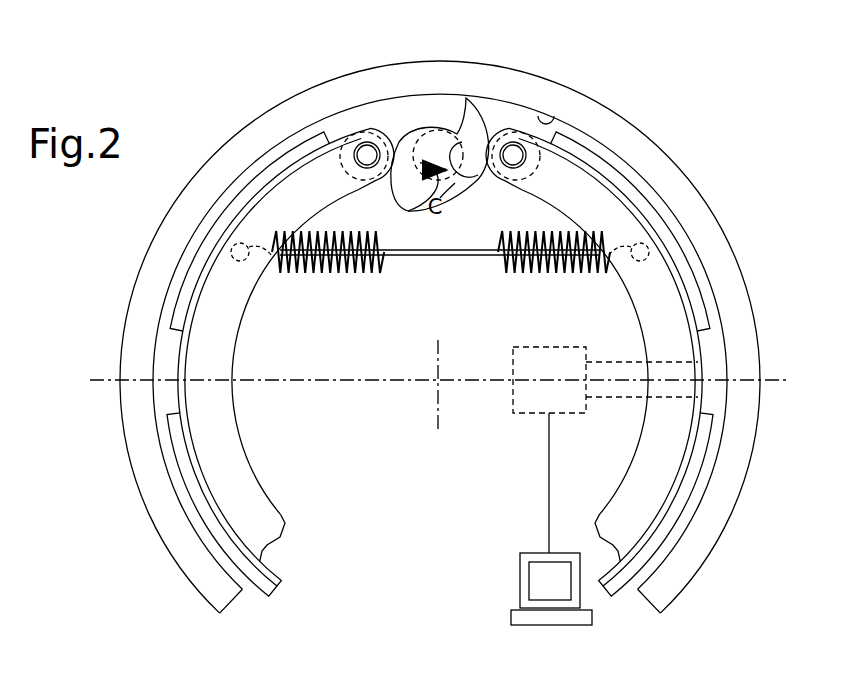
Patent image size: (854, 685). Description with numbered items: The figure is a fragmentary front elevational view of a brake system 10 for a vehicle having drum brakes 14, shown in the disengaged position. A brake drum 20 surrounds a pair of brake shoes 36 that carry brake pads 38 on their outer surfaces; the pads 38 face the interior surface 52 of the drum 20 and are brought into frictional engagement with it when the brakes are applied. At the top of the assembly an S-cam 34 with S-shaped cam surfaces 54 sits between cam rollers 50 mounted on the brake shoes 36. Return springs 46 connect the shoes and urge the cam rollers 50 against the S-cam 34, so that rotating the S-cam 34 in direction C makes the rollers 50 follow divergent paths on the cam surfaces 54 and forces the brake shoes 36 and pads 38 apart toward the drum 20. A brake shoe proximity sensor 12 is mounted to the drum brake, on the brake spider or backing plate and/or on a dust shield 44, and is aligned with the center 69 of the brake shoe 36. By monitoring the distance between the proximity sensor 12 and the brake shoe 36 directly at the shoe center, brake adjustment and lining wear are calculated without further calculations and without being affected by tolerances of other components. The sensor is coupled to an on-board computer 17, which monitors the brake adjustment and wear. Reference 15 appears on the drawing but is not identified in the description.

The brake system 10 is at (350, 46).
The brake shoe proximity sensor 12 is at (517, 423).
The drum brakes 14 is at (120, 266).
The brake shoe 15 is at (270, 425).
The on-board computer 17 is at (517, 582).
The brake drum 20 is at (530, 88).
The S-cam 34 is at (437, 143).
The brake shoe 36 is at (245, 520).
The brake pads 38 is at (230, 212).
The dust shield 44 is at (265, 355).
The return springs 46 is at (340, 270).
The cam rollers 50 is at (370, 135).
The interior surface 52 is at (555, 118).
The S-shaped cam surfaces 54 is at (498, 112).
The center 69 is at (700, 375).